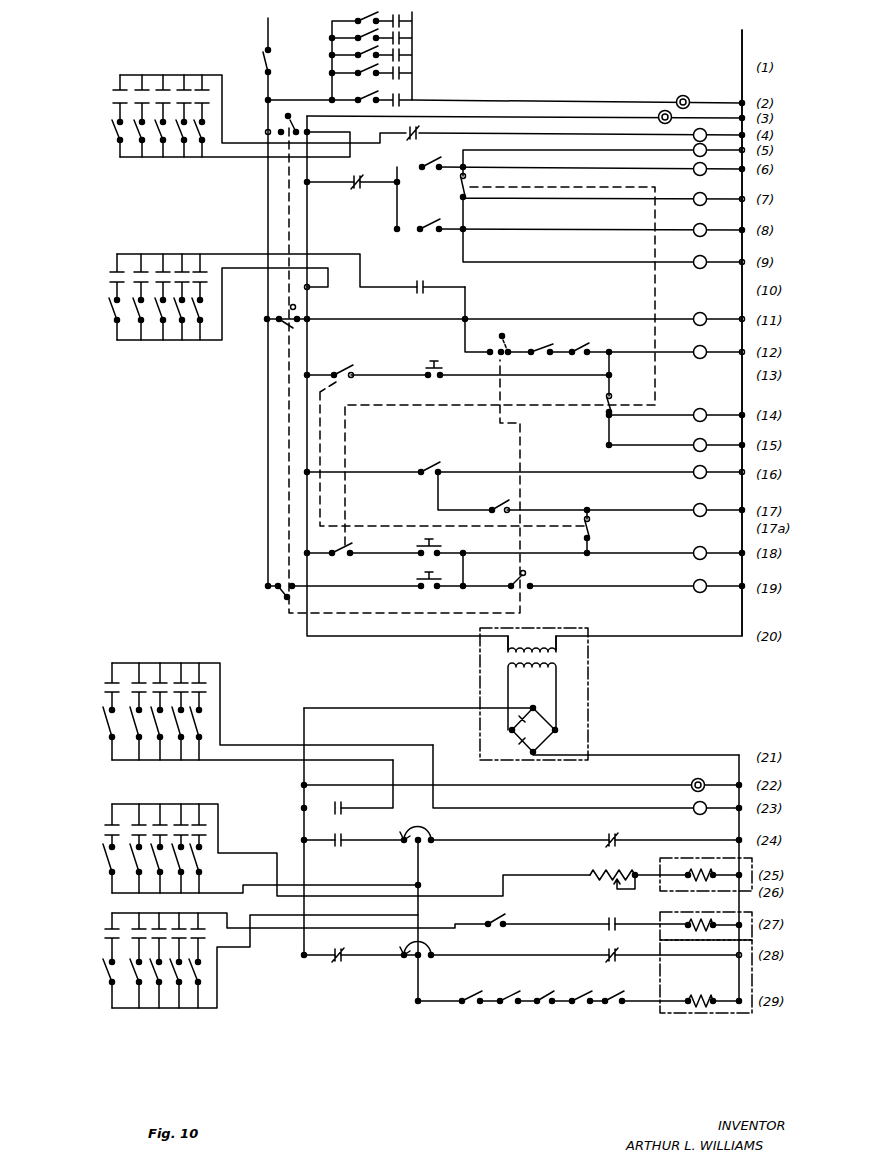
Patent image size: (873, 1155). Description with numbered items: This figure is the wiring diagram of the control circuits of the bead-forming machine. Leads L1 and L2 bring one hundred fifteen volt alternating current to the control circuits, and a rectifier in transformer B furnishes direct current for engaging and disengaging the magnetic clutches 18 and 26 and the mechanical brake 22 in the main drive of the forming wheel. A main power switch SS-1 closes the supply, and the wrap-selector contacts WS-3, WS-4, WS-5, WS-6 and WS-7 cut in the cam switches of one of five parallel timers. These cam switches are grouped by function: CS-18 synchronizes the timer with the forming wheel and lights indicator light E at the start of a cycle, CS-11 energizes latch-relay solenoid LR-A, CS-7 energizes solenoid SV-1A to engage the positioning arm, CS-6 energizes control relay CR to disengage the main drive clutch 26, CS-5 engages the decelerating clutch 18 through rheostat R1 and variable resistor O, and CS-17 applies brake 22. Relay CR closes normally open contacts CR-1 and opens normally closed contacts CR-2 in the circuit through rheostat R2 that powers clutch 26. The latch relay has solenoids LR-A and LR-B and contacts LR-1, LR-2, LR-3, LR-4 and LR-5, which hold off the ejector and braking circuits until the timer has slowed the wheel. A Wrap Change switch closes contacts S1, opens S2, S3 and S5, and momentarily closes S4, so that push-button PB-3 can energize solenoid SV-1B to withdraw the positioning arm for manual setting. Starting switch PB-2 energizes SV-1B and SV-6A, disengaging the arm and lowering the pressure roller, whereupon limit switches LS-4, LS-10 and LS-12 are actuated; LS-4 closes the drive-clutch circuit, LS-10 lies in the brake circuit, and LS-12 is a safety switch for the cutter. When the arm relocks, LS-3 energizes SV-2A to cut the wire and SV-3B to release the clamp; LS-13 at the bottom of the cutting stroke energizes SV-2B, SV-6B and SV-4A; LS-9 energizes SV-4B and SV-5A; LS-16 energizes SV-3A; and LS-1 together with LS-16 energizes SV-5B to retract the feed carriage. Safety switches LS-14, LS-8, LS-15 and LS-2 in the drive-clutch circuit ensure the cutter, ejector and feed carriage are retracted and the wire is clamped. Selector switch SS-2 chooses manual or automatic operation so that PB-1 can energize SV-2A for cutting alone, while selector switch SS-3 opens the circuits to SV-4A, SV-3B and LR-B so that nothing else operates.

The power supply lead L1 is at (266, 22).
The power supply lead L2 is at (741, 62).
The indicator light E is at (680, 94).
The transformer B is at (590, 684).
The magnetic clutch 18 is at (758, 866).
The mechanical brake 22 is at (760, 942).
The main drive clutch 26 is at (760, 984).
The cam switch CS-11 is at (110, 150).
The cam switch CS-18 is at (352, 22).
The cam switch CS-7 is at (104, 327).
The cam switch CS-6 is at (98, 732).
The cam switch CS-5 is at (98, 860).
The cam switch CS-17 is at (98, 974).
The main power switch SS-1 is at (262, 58).
The selector switch SS-2 is at (340, 372).
The selector switch SS-3 is at (465, 196).
The Wrap Change switch contacts S1 is at (276, 592).
The Wrap Change switch contacts S2 is at (520, 592).
The Wrap Change switch contacts S3 is at (286, 124).
The Wrap Change switch contacts S4 is at (286, 312).
The Wrap Change switch contacts S5 is at (492, 350).
The latch relay contacts LR-1 is at (406, 131).
The latch relay contacts LR-2 is at (358, 190).
The latch relay contacts LR-3 is at (428, 286).
The latch relay contacts LR-4 is at (350, 802).
The latch relay contacts LR-5 is at (606, 930).
The latch relay solenoid LR-A is at (696, 131).
The latch relay solenoid LR-B is at (698, 440).
The control relay CR is at (694, 806).
The control relay contacts CR-1 is at (338, 848).
The control relay contacts CR-2 is at (338, 962).
The rheostat R1 is at (432, 836).
The rheostat R2 is at (432, 950).
The variable resistor O is at (596, 873).
The push-button switch PB-1 is at (428, 362).
The starting switch PB-2 is at (420, 541).
The push-button switch PB-3 is at (422, 575).
The limit switch LS-1 is at (496, 504).
The limit switch LS-2 is at (548, 1004).
The limit switch LS-3 is at (584, 344).
The limit switch LS-4 is at (470, 1004).
The limit switch LS-8 is at (588, 1004).
The limit switch LS-9 is at (436, 232).
The limit switch LS-10 is at (502, 916).
The limit switch LS-12 is at (544, 345).
The limit switch LS-13 is at (436, 162).
The limit switch LS-14 is at (510, 1004).
The limit switch LS-15 is at (620, 1004).
The limit switch LS-16 is at (428, 464).
The solenoid SV-1A is at (702, 315).
The solenoid SV-1B is at (702, 548).
The solenoid SV-2A is at (704, 348).
The solenoid SV-2B is at (696, 164).
The solenoid SV-3A is at (698, 468).
The solenoid SV-3B is at (704, 404).
The solenoid SV-4A is at (696, 192).
The solenoid SV-4B is at (700, 218).
The solenoid SV-5A is at (702, 258).
The solenoid SV-5B is at (700, 504).
The solenoid SV-6A is at (702, 582).
The solenoid SV-6B is at (696, 146).
The wrap-selector switch contacts WS-3 is at (205, 96).
The wrap-selector switch contacts WS-4 is at (190, 100).
The wrap-selector switch contacts WS-5 is at (170, 92).
The wrap-selector switch contacts WS-6 is at (148, 95).
The wrap-selector switch contacts WS-7 is at (118, 90).